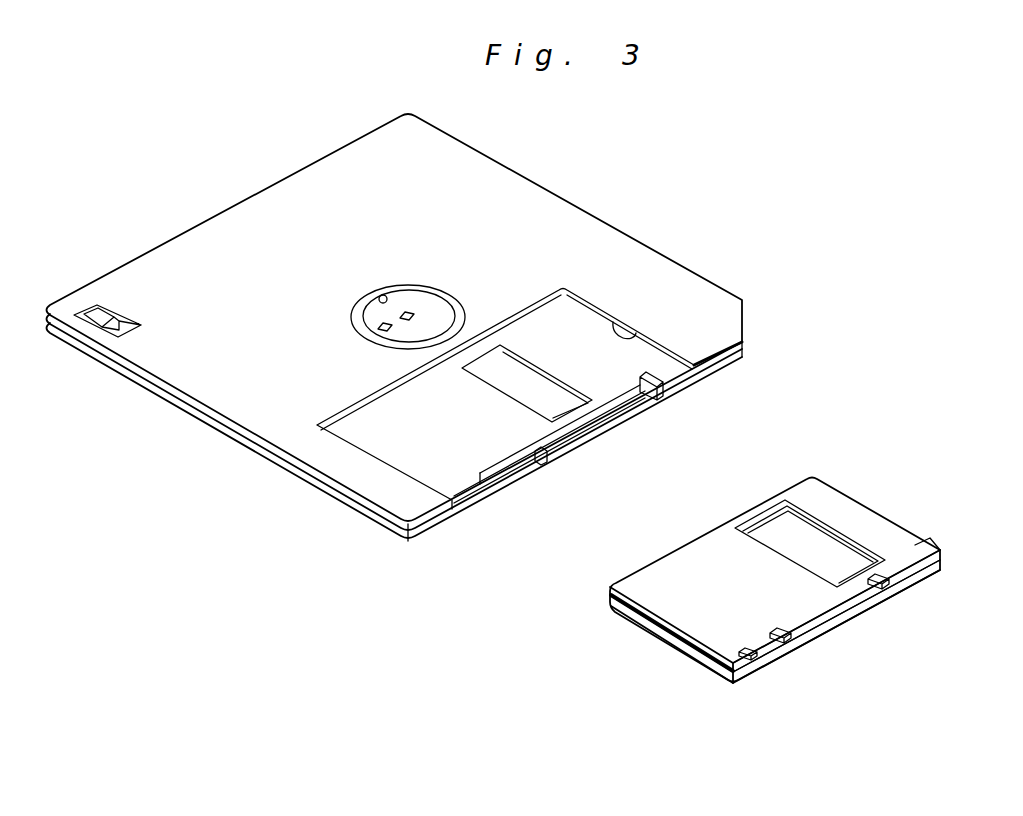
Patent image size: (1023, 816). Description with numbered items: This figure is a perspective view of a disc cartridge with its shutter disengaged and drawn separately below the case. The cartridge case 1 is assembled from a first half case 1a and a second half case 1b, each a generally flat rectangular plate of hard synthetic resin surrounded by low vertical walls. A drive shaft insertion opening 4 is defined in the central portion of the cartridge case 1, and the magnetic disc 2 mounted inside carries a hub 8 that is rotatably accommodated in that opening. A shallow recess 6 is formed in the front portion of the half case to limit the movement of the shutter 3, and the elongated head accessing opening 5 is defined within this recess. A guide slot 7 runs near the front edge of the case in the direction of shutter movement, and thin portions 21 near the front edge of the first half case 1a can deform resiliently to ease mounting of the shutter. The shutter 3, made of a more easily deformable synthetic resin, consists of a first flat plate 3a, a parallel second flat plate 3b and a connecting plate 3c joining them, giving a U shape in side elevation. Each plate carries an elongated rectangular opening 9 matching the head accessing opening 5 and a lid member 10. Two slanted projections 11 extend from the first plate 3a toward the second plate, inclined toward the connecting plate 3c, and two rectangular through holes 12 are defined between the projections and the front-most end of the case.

The cartridge case 1 is at (106, 453).
The first half case 1a is at (218, 392).
The second half case 1b is at (238, 438).
The magnetic disc 2 is at (511, 363).
The shutter 3 is at (722, 595).
The first flat plate 3a is at (645, 599).
The second flat plate 3b is at (650, 613).
The connecting plate 3c is at (838, 620).
The drive shaft insertion opening 4 is at (388, 293).
The head accessing opening 5 is at (540, 380).
The shallow recess 6 is at (643, 333).
The guide slot 7 is at (605, 407).
The hub 8 is at (428, 303).
The elongated rectangular opening 9 is at (818, 540).
The lid member 10 is at (717, 666).
The projections 11 is at (760, 656).
The through holes 12 is at (801, 645).
The thin portions 21 is at (558, 457).